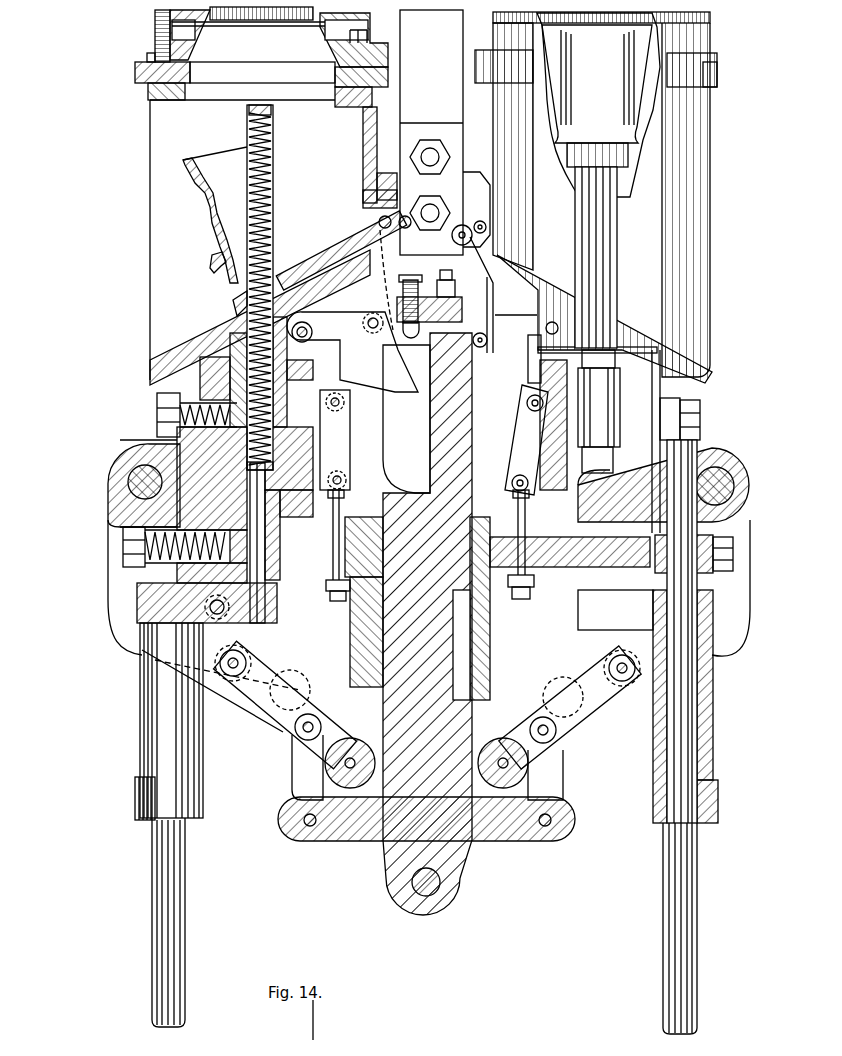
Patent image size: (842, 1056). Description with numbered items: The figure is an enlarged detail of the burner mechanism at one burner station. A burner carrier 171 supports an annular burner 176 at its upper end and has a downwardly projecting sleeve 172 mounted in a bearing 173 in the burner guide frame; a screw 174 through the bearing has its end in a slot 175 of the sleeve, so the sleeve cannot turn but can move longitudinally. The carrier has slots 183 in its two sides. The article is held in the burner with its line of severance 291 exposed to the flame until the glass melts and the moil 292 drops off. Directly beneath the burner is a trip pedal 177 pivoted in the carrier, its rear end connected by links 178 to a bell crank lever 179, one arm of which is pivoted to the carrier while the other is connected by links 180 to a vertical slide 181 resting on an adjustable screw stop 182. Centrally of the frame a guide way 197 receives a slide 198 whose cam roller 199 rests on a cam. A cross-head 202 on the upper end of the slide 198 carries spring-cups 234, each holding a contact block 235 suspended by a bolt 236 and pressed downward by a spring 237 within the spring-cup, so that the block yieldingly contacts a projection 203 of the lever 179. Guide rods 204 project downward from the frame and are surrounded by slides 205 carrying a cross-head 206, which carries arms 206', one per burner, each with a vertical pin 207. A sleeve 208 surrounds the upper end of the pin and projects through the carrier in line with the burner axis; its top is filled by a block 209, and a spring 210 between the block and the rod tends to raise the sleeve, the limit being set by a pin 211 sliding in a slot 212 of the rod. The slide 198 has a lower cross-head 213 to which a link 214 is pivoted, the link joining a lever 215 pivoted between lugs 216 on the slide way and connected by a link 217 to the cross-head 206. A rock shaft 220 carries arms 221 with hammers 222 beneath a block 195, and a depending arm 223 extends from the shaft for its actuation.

The burner carrier 171 is at (366, 136).
The sleeve 172 is at (215, 378).
The bearing 173 is at (175, 437).
The screw 174 is at (160, 400).
The slot 175 is at (175, 425).
The annular burner 176 is at (155, 32).
The trip pedal 177 is at (312, 243).
The links 178 is at (395, 262).
The bell crank lever 179 is at (414, 352).
The links 180 is at (342, 432).
The vertical slide 181 is at (345, 488).
The adjustable screw stop 182 is at (328, 590).
The slots 183 is at (250, 114).
The block 195 is at (604, 470).
The guide way 197 is at (488, 632).
The slide 198 is at (465, 454).
The cam roller 199 is at (428, 900).
The cross-head 202 is at (445, 282).
The projection 203 is at (413, 386).
The guide rods 204 is at (180, 895).
The slides 205 is at (142, 745).
The cross-head 206 is at (651, 679).
The arm 206' is at (229, 611).
The vertical pin 207 is at (224, 614).
The sleeve 208 is at (245, 292).
The block 209 is at (258, 106).
The spring 210 is at (275, 128).
The pin 211 is at (275, 466).
The slot 212 is at (262, 552).
The lower cross-head 213 is at (500, 836).
The link 214 is at (292, 788).
The lever 215 is at (290, 732).
The lugs 216 is at (350, 780).
The link 217 is at (248, 660).
The rock shaft 220 is at (127, 490).
The arms 221 is at (650, 513).
The hammers 222 is at (604, 488).
The depending arm 223 is at (120, 612).
The spring-cups 234 is at (425, 320).
The contact block 235 is at (410, 331).
The bolt 236 is at (408, 282).
The pivot 237 is at (397, 288).
The line of severance 291 is at (604, 28).
The moil 292 is at (204, 202).